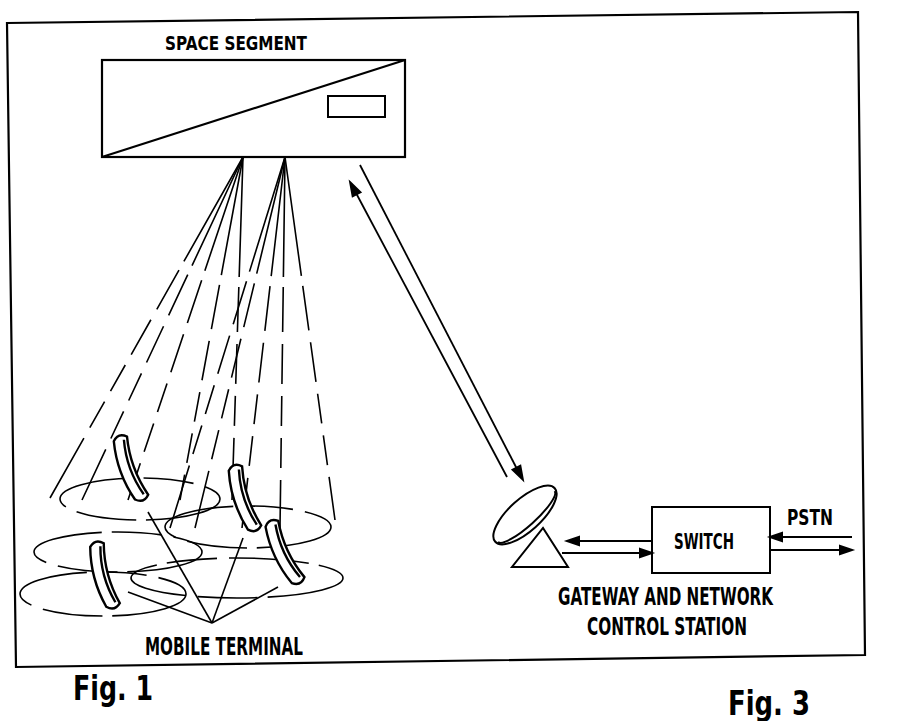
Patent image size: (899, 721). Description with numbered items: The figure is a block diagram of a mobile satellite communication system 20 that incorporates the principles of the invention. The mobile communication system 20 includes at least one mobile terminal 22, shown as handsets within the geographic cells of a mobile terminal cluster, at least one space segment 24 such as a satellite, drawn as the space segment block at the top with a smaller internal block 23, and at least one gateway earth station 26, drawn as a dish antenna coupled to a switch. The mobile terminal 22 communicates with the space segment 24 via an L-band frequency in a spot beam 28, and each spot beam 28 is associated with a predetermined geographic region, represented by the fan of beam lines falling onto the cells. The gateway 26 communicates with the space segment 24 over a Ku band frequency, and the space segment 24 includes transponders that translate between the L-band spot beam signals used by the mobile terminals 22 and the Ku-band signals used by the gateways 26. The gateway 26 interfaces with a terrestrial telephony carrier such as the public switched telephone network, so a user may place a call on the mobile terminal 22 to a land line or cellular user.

In FIG. 1, the mobile satellite communication system 20 is at (445, 662).
In FIG. 1, the mobile terminal 22 is at (98, 598).
In FIG. 1, the satellite processor 23 is at (385, 107).
In FIG. 1, the space segment 24 is at (400, 60).
In FIG. 1, the gateway earth station 26 is at (492, 540).
In FIG. 3, the gateway earth station 26 is at (547, 720).
In FIG. 1, the spot beam 28 is at (315, 347).